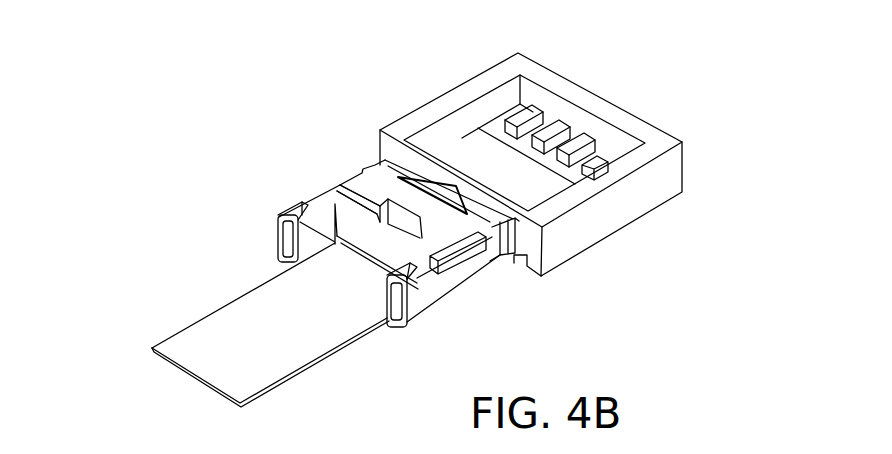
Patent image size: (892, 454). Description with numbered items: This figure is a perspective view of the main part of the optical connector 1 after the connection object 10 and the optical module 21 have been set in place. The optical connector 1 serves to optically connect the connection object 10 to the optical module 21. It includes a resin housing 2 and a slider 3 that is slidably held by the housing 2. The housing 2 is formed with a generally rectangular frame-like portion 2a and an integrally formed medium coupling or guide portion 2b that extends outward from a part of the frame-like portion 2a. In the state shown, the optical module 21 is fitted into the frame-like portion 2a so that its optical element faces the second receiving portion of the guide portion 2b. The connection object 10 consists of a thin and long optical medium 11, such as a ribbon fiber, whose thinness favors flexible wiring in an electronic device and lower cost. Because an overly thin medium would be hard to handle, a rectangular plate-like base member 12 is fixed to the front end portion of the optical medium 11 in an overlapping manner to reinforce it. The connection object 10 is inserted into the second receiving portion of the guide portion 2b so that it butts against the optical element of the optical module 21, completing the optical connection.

The optical connector 1 is at (475, 222).
The housing 2 is at (510, 155).
The frame-like portion 2a is at (561, 86).
The guide portion 2b is at (390, 302).
The slider 3 is at (379, 262).
The connection object 10 is at (230, 319).
The optical medium 11 is at (242, 292).
The base member 12 is at (327, 233).
The optical module 21 is at (477, 153).